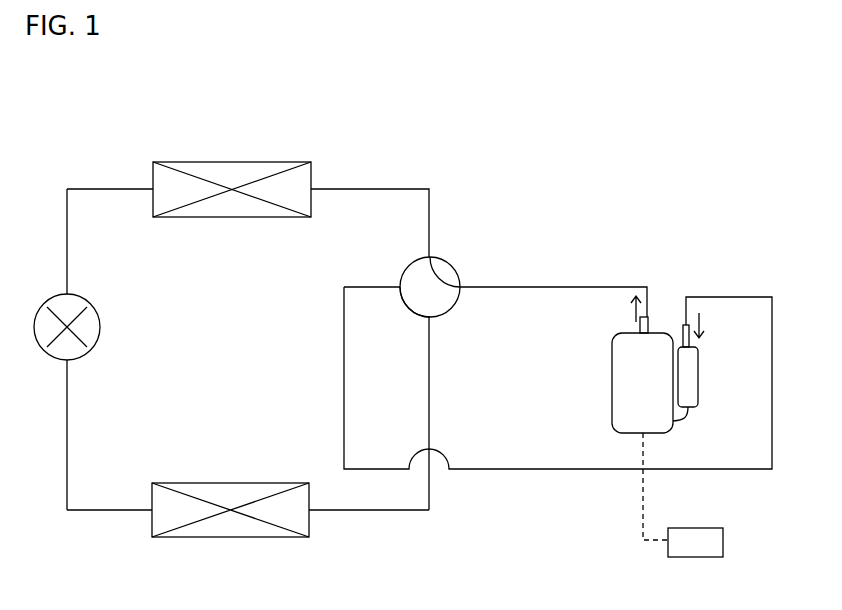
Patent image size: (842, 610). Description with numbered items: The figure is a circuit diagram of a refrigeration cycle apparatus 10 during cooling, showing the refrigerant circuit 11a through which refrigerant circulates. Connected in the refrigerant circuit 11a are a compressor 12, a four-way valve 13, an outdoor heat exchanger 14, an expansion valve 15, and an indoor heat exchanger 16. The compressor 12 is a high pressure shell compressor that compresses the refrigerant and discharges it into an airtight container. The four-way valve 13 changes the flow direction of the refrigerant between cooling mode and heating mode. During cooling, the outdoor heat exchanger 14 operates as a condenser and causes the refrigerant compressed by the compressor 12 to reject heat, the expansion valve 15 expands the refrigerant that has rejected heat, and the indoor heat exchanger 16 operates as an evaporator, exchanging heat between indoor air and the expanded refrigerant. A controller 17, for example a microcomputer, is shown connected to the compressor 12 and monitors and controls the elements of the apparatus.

The refrigeration cycle apparatus 10 is at (716, 153).
The refrigerant circuit 11a is at (360, 189).
The compressor 12 is at (612, 400).
The four-way valve 13 is at (455, 264).
The outdoor heat exchanger 14 is at (240, 162).
The expansion valve 15 is at (80, 294).
The indoor heat exchanger 16 is at (240, 483).
The controller 17 is at (696, 528).